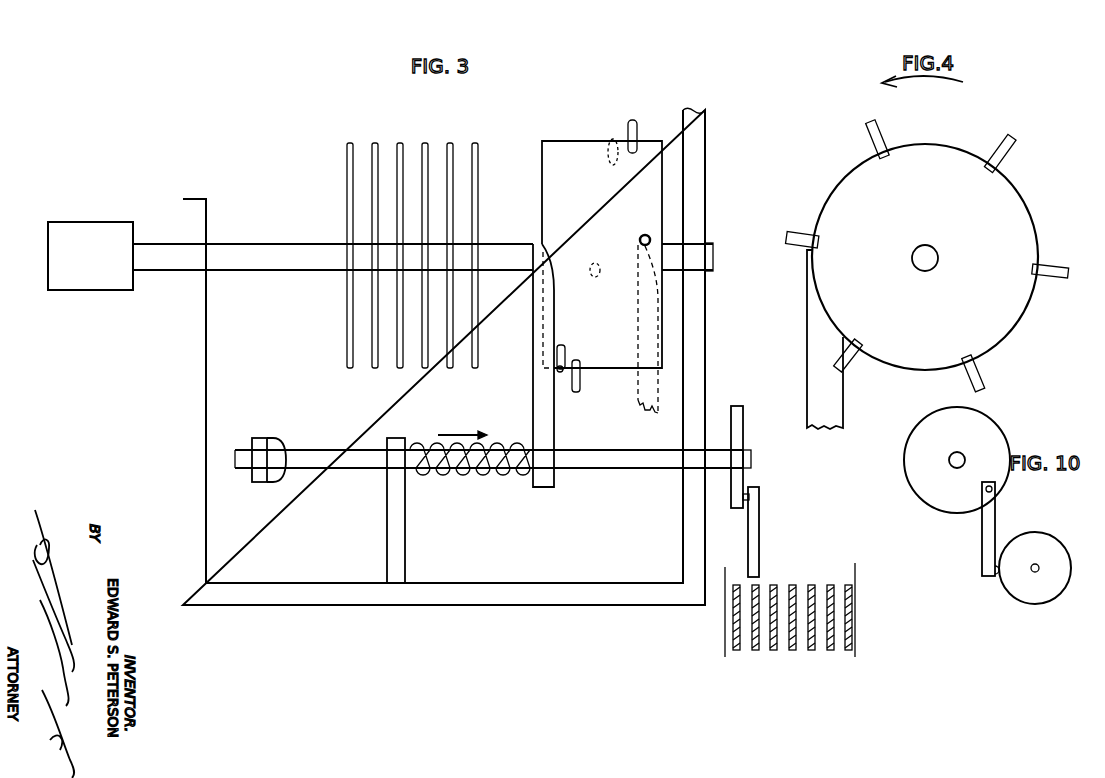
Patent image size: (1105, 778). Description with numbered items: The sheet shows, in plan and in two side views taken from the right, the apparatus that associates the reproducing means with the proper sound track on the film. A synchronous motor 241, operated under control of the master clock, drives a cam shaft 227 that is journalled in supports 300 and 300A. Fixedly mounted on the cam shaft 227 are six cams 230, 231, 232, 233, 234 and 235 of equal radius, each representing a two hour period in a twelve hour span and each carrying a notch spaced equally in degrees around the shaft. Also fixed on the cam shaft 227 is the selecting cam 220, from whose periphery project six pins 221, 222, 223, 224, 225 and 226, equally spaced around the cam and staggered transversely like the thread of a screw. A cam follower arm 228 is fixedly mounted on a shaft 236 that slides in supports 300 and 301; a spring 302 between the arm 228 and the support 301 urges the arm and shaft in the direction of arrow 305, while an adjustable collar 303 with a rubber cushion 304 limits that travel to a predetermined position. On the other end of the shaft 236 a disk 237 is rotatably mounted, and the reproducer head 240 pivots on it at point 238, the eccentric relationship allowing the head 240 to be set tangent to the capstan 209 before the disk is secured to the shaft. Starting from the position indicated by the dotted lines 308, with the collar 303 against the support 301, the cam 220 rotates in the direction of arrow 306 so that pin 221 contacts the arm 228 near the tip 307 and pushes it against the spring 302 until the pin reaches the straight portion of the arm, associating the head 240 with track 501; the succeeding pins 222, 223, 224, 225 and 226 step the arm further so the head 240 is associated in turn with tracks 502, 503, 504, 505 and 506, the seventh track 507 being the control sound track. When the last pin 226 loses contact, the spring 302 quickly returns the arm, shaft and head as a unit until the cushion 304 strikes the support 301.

In FIG. 3, the synchronous motor 241 is at (90, 256).
In FIG. 3, the cam shaft 227 is at (272, 251).
In FIG. 4, the cam shaft 227 is at (930, 256).
In FIG. 3, the support 300 is at (683, 538).
In FIG. 3, the support 300A is at (183, 537).
In FIG. 3, the cam 230 is at (477, 142).
In FIG. 3, the cam 231 is at (455, 135).
In FIG. 3, the cam 232 is at (425, 142).
In FIG. 3, the cam 233 is at (403, 135).
In FIG. 3, the cam 234 is at (375, 142).
In FIG. 3, the cam 235 is at (350, 143).
In FIG. 3, the cam 220 is at (542, 178).
In FIG. 4, the cam 220 is at (867, 188).
In FIG. 3, the pin 221 is at (648, 235).
In FIG. 4, the pin 221 is at (798, 230).
In FIG. 3, the pin 222 is at (640, 110).
In FIG. 4, the pin 222 is at (878, 138).
In FIG. 3, the pin 223 is at (612, 165).
In FIG. 4, the pin 223 is at (995, 150).
In FIG. 3, the pin 224 is at (600, 255).
In FIG. 4, the pin 224 is at (1058, 273).
In FIG. 3, the pin 225 is at (582, 386).
In FIG. 4, the pin 225 is at (978, 372).
In FIG. 3, the pin 226 is at (562, 372).
In FIG. 4, the pin 226 is at (847, 360).
In FIG. 3, the cam follower arm 228 is at (533, 407).
In FIG. 4, the cam follower arm 228 is at (810, 347).
In FIG. 3, the tip 307 is at (536, 244).
In FIG. 3, the dotted lines 308 is at (640, 408).
In FIG. 3, the support 301 is at (413, 537).
In FIG. 3, the spring 302 is at (445, 472).
In FIG. 3, the adjustable collar 303 is at (256, 437).
In FIG. 3, the rubber cushion 304 is at (279, 437).
In FIG. 3, the arrow 305 is at (462, 427).
In FIG. 4, the arrow 306 is at (933, 87).
In FIG. 3, the shaft 236 is at (751, 458).
In FIG. 10, the shaft 236 is at (963, 440).
In FIG. 3, the disk 237 is at (743, 435).
In FIG. 10, the disk 237 is at (997, 432).
In FIG. 3, the pivot point 238 is at (749, 497).
In FIG. 10, the pivot point 238 is at (989, 485).
In FIG. 3, the reproducer head 240 is at (759, 530).
In FIG. 10, the reproducer head 240 is at (995, 513).
In FIG. 10, the capstan 209 is at (1035, 547).
In FIG. 3, the sound track 501 is at (848, 651).
In FIG. 3, the sound track 502 is at (830, 652).
In FIG. 3, the sound track 503 is at (811, 651).
In FIG. 3, the sound track 504 is at (792, 652).
In FIG. 3, the sound track 505 is at (773, 651).
In FIG. 3, the sound track 506 is at (755, 652).
In FIG. 3, the control sound track 507 is at (736, 651).